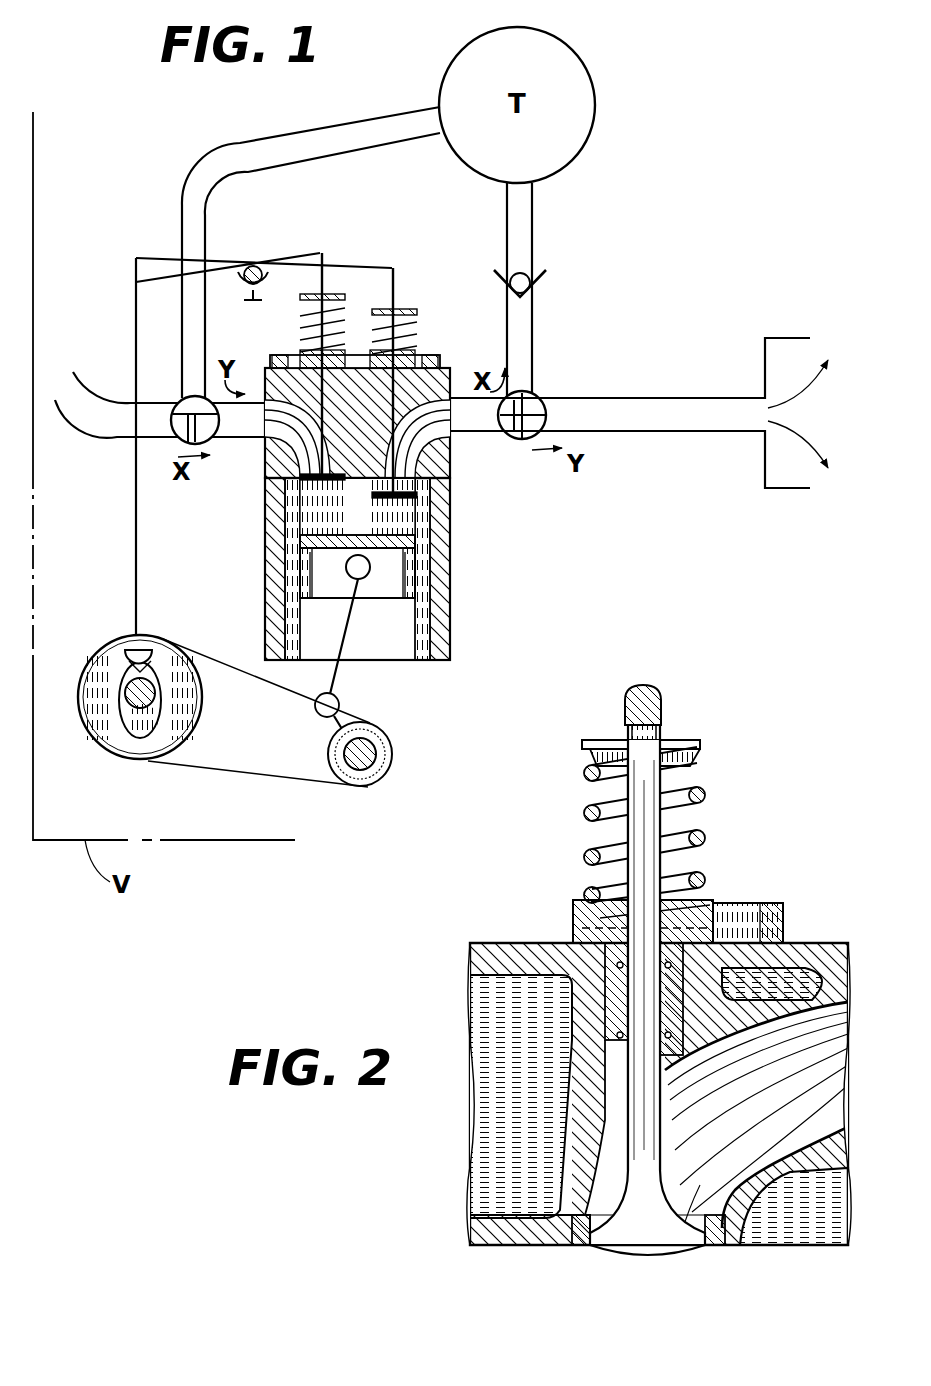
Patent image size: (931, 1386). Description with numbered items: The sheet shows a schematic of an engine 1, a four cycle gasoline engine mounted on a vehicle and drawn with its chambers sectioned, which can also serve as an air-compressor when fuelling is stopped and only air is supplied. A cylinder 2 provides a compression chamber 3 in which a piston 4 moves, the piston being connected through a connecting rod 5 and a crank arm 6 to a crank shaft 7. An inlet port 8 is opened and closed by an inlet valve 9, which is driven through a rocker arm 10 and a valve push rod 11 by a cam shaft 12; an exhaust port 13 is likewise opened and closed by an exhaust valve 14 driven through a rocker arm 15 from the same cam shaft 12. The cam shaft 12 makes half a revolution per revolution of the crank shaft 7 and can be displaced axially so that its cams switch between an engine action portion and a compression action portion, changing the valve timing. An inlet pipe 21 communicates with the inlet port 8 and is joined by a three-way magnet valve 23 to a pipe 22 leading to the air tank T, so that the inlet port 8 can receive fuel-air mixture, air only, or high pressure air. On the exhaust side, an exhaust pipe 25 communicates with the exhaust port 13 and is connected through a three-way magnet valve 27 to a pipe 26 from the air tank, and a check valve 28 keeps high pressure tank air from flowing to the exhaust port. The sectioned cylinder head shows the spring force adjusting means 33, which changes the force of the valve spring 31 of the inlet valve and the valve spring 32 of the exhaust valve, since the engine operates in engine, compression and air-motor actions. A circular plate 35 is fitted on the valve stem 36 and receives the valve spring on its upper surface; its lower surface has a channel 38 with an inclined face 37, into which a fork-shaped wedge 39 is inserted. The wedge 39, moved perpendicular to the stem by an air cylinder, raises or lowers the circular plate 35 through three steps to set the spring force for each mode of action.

In FIG. 1, the 4 cycle gasoline engine 1 is at (369, 441).
In FIG. 1, the cylinder 2 is at (450, 545).
In FIG. 1, the compression chamber 3 is at (300, 600).
In FIG. 1, the piston 4 is at (385, 578).
In FIG. 1, the connecting rod 5 is at (340, 680).
In FIG. 1, the crank arm 6 is at (388, 745).
In FIG. 1, the crank shaft 7 is at (375, 780).
In FIG. 1, the inlet port 8 is at (300, 500).
In FIG. 1, the inlet valve 9 is at (300, 548).
In FIG. 1, the rocker arm 10 is at (292, 250).
In FIG. 1, the valve push rod 11 is at (135, 545).
In FIG. 1, the cam shaft 12 is at (135, 705).
In FIG. 1, the exhaust port 13 is at (410, 455).
In FIG. 1, the exhaust valve 14 is at (395, 512).
In FIG. 1, the rocker arm 15 is at (363, 265).
In FIG. 1, the inlet pipe 21 is at (243, 440).
In FIG. 1, the pipe 22 is at (182, 335).
In FIG. 1, the 3-way magnet valve 23 is at (188, 440).
In FIG. 1, the exhaust pipe 25 is at (485, 433).
In FIG. 1, the pipe 26 is at (532, 230).
In FIG. 1, the 3-way magnet valve 27 is at (535, 402).
In FIG. 1, the check valve 28 is at (533, 283).
In FIG. 1, the valve spring 31 is at (322, 318).
In FIG. 2, the valve spring 31 is at (672, 787).
In FIG. 1, the valve spring 32 is at (395, 325).
In FIG. 2, the spring force adjusting means 33 is at (820, 924).
In FIG. 2, the circular plate 35 is at (705, 897).
In FIG. 2, the valve stem 36 is at (662, 825).
In FIG. 2, the inclined face 37 is at (575, 910).
In FIG. 2, the channel 38 is at (572, 928).
In FIG. 2, the wedge 39 is at (770, 905).